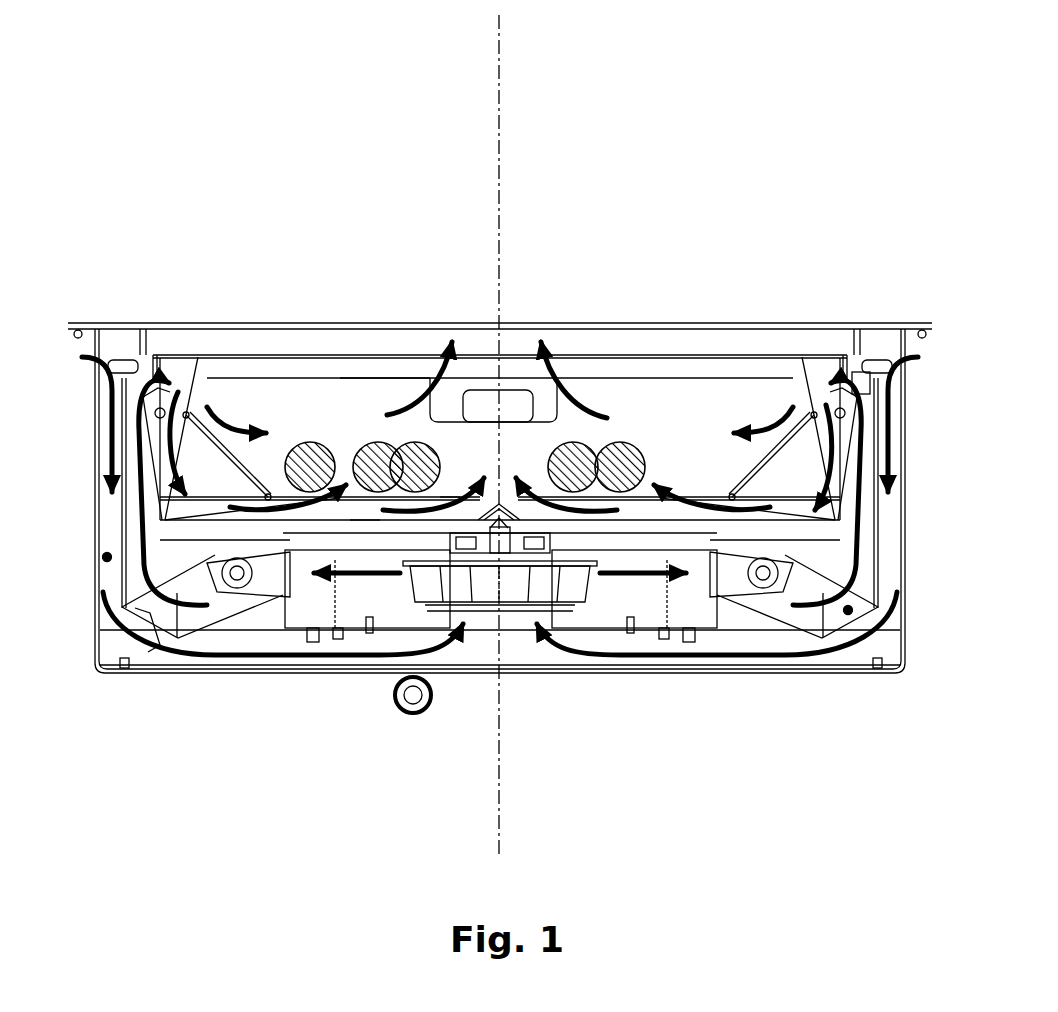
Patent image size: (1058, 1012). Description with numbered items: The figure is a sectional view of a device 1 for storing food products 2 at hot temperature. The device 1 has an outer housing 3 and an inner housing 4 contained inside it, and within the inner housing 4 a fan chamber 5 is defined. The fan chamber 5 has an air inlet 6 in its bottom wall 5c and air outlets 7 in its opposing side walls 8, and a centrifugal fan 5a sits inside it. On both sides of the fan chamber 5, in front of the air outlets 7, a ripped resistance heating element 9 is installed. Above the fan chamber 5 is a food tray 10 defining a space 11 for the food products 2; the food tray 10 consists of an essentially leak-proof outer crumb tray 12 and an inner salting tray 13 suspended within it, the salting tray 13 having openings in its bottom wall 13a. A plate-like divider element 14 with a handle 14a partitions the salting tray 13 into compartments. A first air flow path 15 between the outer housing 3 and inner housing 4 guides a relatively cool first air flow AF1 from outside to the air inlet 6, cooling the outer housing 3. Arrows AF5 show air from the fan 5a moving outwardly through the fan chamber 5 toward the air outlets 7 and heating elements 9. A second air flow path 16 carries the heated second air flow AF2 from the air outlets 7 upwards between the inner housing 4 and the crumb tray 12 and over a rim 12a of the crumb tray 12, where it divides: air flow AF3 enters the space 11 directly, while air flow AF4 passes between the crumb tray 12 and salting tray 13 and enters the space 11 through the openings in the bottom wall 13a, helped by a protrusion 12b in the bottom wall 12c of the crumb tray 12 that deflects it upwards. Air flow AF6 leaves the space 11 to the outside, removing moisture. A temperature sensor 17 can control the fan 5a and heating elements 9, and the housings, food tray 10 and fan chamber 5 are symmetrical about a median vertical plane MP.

The device 1 is at (610, 270).
The food products 2 is at (310, 442).
The outer housing 3 is at (858, 673).
The inner housing 4 is at (193, 637).
The fan chamber 5 is at (347, 607).
The fan 5a is at (495, 590).
The bottom wall 5c is at (397, 633).
The air inlet 6 is at (511, 620).
The air outlets 7 is at (275, 587).
The side walls 8 is at (290, 557).
The heating element 9 is at (237, 578).
The food tray 10 is at (670, 431).
The space 11 is at (548, 452).
The crumb tray 12 is at (207, 508).
The rim 12a is at (840, 480).
The protrusion 12b is at (505, 513).
The bottom wall 12c is at (367, 520).
The salting tray 13 is at (234, 458).
The bottom wall 13a is at (447, 493).
The divider element 14 is at (365, 408).
The handle 14a is at (510, 410).
The first air flow path 15 is at (105, 561).
The second air flow path 16 is at (848, 614).
The temperature sensor 17 is at (150, 613).
The first air flow AF1 is at (110, 466).
The second air flow AF2 is at (836, 380).
The air flow AF3 is at (500, 402).
The air flow AF4 is at (662, 487).
The air flow AF5 is at (500, 560).
The air flow AF6 is at (502, 380).
The median vertical plane MP is at (500, 58).